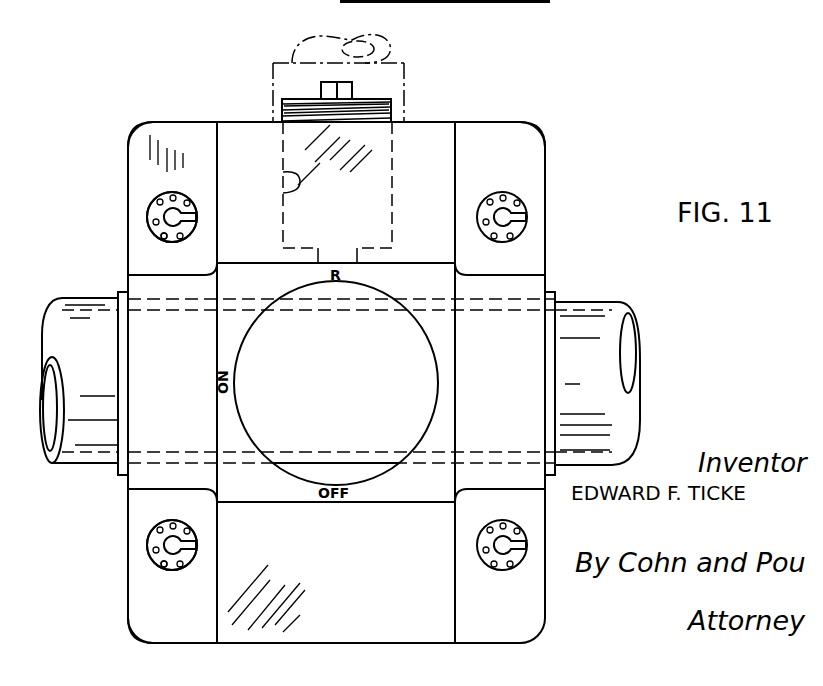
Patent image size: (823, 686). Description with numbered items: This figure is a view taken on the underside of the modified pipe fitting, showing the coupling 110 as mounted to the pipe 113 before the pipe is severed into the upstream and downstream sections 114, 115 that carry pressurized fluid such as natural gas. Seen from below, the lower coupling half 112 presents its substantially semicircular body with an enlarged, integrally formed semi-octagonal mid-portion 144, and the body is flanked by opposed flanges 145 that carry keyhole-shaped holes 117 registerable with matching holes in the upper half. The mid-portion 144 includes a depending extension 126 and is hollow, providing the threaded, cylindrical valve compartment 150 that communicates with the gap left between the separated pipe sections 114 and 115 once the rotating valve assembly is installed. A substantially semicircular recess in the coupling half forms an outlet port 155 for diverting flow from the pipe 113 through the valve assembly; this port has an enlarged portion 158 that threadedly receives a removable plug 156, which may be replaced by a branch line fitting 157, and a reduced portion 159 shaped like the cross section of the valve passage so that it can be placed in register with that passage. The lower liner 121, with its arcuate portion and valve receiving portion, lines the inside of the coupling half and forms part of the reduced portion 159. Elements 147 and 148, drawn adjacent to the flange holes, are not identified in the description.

The coupling 110 is at (550, 190).
The lower coupling half 112 is at (470, 122).
The pipe 113 is at (612, 302).
The upstream pipe section 114 is at (80, 465).
The downstream pipe section 115 is at (610, 448).
The keyhole-shaped holes 117 is at (150, 216).
The lower liner 121 is at (556, 292).
The depending extension 126 is at (217, 348).
The semi-octagonal mid-portion 144 is at (217, 136).
The flanges 145 is at (156, 123).
The screw head 147 is at (160, 200).
The hole 148 is at (158, 232).
The valve compartment 150 is at (238, 365).
The outlet port 155 is at (392, 173).
The removable plug 156 is at (352, 90).
The branch line fitting 157 is at (388, 42).
The enlarged portion 158 is at (283, 193).
The reduced portion 159 is at (325, 258).